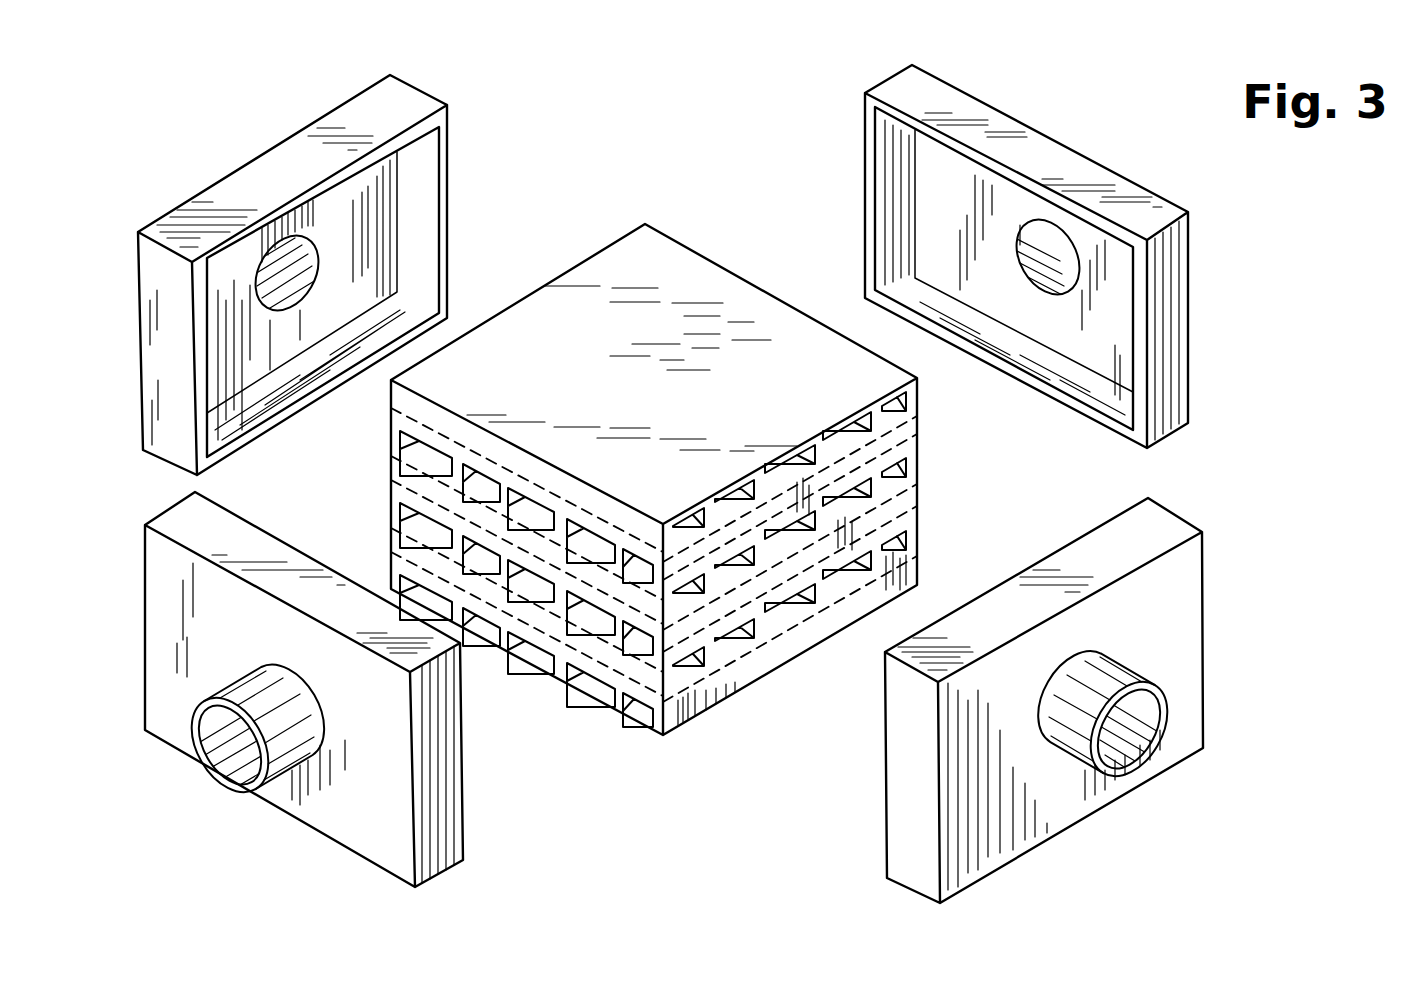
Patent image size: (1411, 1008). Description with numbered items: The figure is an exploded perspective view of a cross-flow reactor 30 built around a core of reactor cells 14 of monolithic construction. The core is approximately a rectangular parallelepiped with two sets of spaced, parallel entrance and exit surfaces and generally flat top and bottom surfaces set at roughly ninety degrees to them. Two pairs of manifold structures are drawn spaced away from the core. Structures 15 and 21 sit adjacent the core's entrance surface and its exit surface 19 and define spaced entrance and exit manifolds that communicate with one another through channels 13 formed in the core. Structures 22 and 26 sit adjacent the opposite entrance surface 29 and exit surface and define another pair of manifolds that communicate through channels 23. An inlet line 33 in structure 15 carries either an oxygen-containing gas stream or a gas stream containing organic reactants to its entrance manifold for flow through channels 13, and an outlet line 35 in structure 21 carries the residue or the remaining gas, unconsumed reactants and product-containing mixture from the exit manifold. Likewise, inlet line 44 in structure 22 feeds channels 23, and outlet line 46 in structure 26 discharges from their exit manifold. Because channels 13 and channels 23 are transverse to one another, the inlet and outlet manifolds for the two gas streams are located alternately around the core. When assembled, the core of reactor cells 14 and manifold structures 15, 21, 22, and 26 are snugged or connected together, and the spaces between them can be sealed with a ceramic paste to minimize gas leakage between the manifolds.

The core of reactor cells 14 is at (742, 275).
The channels 13 is at (852, 561).
The channels 23 is at (395, 587).
The entrance surface 29 is at (598, 626).
The exit surface 19 is at (785, 652).
The structure 15 is at (247, 165).
The inlet line 33 is at (323, 250).
The structure 26 is at (932, 73).
The outlet line 46 is at (1027, 217).
The structure 22 is at (335, 842).
The inlet line 44 is at (218, 782).
The structure 21 is at (1083, 820).
The outlet line 35 is at (1123, 668).
The cross-flow reactor 30 is at (158, 482).